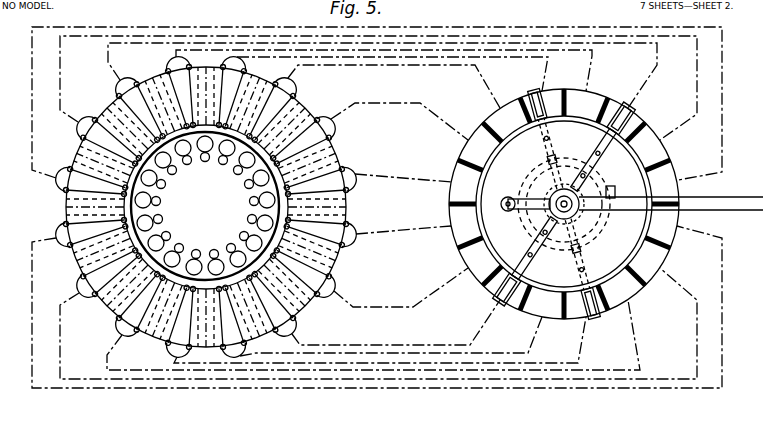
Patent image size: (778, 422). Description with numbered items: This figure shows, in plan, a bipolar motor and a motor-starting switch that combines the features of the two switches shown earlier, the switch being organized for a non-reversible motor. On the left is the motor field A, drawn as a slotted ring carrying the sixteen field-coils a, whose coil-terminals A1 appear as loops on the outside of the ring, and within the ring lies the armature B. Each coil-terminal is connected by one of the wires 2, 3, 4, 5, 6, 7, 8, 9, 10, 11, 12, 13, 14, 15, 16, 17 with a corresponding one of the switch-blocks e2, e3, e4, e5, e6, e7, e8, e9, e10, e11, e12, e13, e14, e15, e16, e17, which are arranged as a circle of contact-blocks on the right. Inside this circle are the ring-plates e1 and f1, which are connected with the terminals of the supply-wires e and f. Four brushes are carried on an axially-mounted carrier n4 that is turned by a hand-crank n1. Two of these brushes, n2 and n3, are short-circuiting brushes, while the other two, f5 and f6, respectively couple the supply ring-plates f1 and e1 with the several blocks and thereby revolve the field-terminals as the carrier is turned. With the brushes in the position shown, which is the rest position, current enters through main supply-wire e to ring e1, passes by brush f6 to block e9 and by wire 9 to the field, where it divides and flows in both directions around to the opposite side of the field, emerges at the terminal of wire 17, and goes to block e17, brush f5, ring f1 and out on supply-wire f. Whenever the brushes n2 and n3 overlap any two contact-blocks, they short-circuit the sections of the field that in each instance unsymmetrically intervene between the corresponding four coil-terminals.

The motor field A is at (194, 207).
The field-coil terminals A1 is at (206, 207).
The field-coils a is at (200, 195).
The armature B is at (205, 206).
The supply-wire e is at (671, 217).
The ring-plate e1 is at (523, 185).
The switch-block e2 is at (506, 119).
The switch-block e3 is at (478, 147).
The switch-block e4 is at (463, 183).
The switch-block e5 is at (463, 223).
The switch-block e6 is at (478, 259).
The switch-block e7 is at (493, 295).
The switch-block e8 is at (542, 302).
The switch-block e9 is at (582, 302).
The switch-block e10 is at (621, 287).
The switch-block e11 is at (649, 259).
The switch-block e12 is at (664, 223).
The switch-block e13 is at (664, 185).
The switch-block e14 is at (649, 147).
The switch-block e15 is at (621, 105).
The switch-block e16 is at (585, 104).
The switch-block e17 is at (563, 79).
The supply-wire f is at (671, 189).
The ring-plate f1 is at (615, 190).
The brush f5 is at (539, 133).
The brush f6 is at (591, 278).
The hand-crank n1 is at (521, 213).
The short-circuiting brush n2 is at (606, 145).
The short-circuiting brush n3 is at (526, 268).
The brush carrier n4 is at (564, 228).
The wire 2 is at (394, 86).
The wire 3 is at (399, 123).
The wire 4 is at (403, 184).
The wire 5 is at (403, 231).
The wire 6 is at (401, 287).
The wire 7 is at (396, 323).
The wire 8 is at (391, 336).
The wire 9 is at (373, 344).
The wire 10 is at (378, 337).
The wire 11 is at (380, 323).
The wire 12 is at (377, 310).
The wire 13 is at (377, 103).
The wire 14 is at (378, 87).
The wire 15 is at (383, 75).
The wire 16 is at (388, 69).
The wire 17 is at (392, 74).